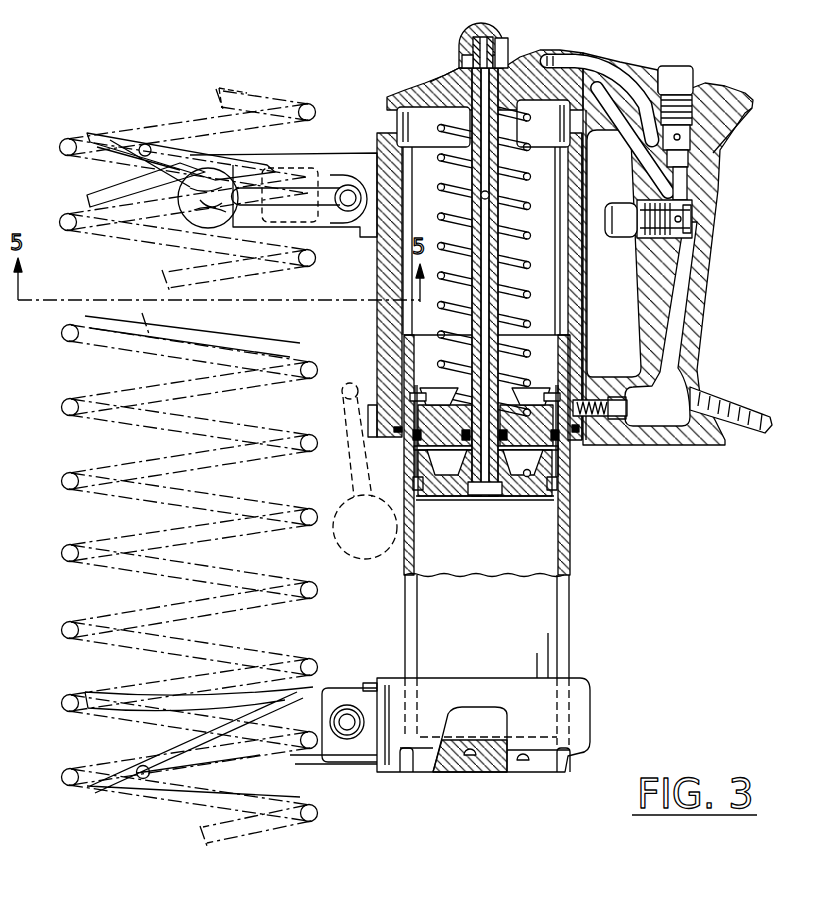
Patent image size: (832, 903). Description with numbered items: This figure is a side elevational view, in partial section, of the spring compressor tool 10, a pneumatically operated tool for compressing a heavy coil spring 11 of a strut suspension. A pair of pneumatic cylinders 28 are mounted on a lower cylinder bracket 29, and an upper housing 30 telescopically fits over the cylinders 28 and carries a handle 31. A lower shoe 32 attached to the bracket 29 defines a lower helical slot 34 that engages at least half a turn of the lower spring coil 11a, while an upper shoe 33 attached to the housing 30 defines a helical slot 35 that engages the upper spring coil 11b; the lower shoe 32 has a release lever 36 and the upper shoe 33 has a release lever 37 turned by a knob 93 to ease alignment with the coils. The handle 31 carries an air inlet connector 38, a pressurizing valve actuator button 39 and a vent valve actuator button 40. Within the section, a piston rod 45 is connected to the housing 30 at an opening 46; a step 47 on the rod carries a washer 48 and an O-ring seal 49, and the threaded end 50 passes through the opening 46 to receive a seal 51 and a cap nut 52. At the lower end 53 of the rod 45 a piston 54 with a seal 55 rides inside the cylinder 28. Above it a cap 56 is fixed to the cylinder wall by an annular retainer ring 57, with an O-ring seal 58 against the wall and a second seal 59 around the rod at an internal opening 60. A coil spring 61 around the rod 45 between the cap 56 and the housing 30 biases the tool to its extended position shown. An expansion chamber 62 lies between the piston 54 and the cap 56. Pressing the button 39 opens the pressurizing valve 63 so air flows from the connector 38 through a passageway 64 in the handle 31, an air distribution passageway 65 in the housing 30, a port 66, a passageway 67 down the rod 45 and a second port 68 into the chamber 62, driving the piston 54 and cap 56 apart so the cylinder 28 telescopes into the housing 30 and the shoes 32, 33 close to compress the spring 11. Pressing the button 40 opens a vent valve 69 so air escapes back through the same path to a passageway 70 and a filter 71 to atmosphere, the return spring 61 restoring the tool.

The spring compressor tool 10 is at (711, 85).
The coil spring 11 is at (243, 87).
The lower spring coil 11a is at (102, 760).
The upper spring coil 11b is at (75, 163).
The pneumatic cylinder 28 is at (568, 565).
The lower cylinder bracket 29 is at (590, 735).
The upper housing 30 is at (586, 309).
The handle 31 is at (720, 282).
The lower shoe 32 is at (358, 768).
The upper shoe 33 is at (336, 152).
The lower helical slot 34 is at (141, 780).
The helical slot 35 is at (142, 145).
The release lever 36 is at (348, 704).
The release lever 37 is at (313, 212).
The air inlet connector 38 is at (757, 408).
The pressurizing valve actuator button 39 is at (615, 232).
The vent valve actuator button 40 is at (683, 66).
The piston rod 45 is at (470, 177).
The opening 46 is at (508, 56).
The step 47 is at (432, 106).
The washer 48 is at (386, 101).
The O-ring seal 49 is at (458, 40).
The threaded end 50 is at (496, 48).
The seal 51 is at (460, 60).
The cap nut 52 is at (466, 25).
The lower end 53 is at (467, 490).
The piston 54 is at (430, 498).
The seal 55 is at (557, 488).
The cap 56 is at (575, 430).
The annular retainer ring 57 is at (420, 393).
The O-ring seal 58 is at (557, 445).
The second seal 59 is at (503, 466).
The internal opening 60 is at (503, 385).
The coil spring 61 is at (528, 210).
The expansion chamber 62 is at (522, 470).
The pressurizing valve 63 is at (692, 211).
The passageway 64 is at (640, 137).
The air distribution passageway 65 is at (550, 90).
The port 66 is at (470, 64).
The passageway 67 is at (497, 193).
The second port 68 is at (488, 495).
The vent valve 69 is at (693, 136).
The passageway 70 is at (640, 73).
The filter 71 is at (558, 50).
The knob 93 is at (198, 226).